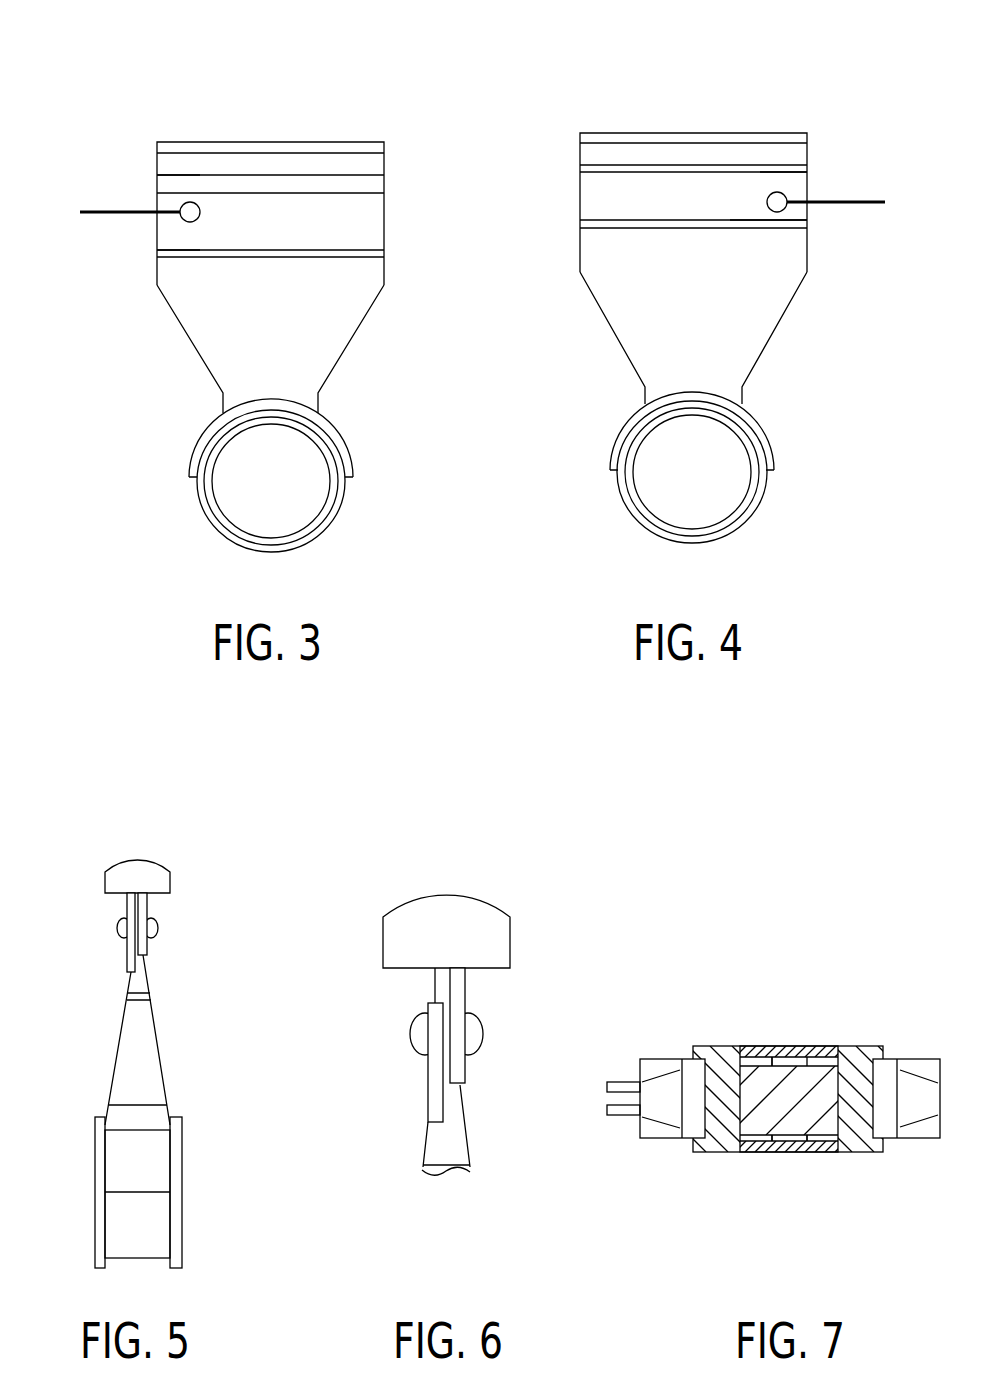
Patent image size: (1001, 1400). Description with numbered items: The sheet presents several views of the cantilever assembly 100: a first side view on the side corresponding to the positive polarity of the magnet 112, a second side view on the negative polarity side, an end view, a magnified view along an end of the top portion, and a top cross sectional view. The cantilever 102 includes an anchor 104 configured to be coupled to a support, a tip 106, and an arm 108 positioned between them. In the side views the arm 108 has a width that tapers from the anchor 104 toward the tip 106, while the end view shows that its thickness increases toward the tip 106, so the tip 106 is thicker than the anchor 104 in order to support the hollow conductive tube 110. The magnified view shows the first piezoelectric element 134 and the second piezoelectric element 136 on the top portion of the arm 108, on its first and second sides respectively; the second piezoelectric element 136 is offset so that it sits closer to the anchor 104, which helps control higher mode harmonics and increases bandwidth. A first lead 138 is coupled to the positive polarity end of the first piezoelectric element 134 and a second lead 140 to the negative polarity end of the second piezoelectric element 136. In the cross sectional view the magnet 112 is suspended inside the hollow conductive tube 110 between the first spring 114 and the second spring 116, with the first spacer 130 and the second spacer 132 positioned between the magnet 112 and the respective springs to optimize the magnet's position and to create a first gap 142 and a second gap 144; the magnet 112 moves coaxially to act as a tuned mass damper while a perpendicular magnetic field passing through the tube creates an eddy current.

In FIG. 3, the cantilever assembly 100 is at (222, 88).
In FIG. 4, the cantilever assembly 100 is at (742, 77).
In FIG. 5, the cantilever assembly 100 is at (110, 812).
In FIG. 7, the cantilever assembly 100 is at (695, 980).
In FIG. 3, the cantilever 102 is at (180, 140).
In FIG. 4, the cantilever 102 is at (775, 133).
In FIG. 7, the cantilever 102 is at (912, 1062).
In FIG. 3, the anchor 104 is at (157, 185).
In FIG. 4, the anchor 104 is at (808, 160).
In FIG. 5, the anchor 104 is at (105, 876).
In FIG. 6, the anchor 104 is at (385, 938).
In FIG. 3, the tip 106 is at (188, 462).
In FIG. 4, the tip 106 is at (775, 452).
In FIG. 5, the tip 106 is at (125, 1160).
In FIG. 3, the arm 108 is at (198, 362).
In FIG. 4, the arm 108 is at (762, 352).
In FIG. 5, the arm 108 is at (115, 1050).
In FIG. 6, the arm 108 is at (425, 1152).
In FIG. 3, the hollow conductive tube 110 is at (200, 497).
In FIG. 4, the hollow conductive tube 110 is at (762, 508).
In FIG. 5, the hollow conductive tube 110 is at (95, 1208).
In FIG. 7, the hollow conductive tube 110 is at (855, 1142).
In FIG. 7, the magnet 112 is at (762, 1108).
In FIG. 4, the first spring 114 is at (708, 500).
In FIG. 7, the first spring 114 is at (828, 1150).
In FIG. 3, the second spring 116 is at (258, 500).
In FIG. 7, the second spring 116 is at (830, 1043).
In FIG. 7, the first spacer 130 is at (790, 1148).
In FIG. 7, the second spacer 132 is at (797, 1046).
In FIG. 3, the first piezoelectric element 134 is at (165, 238).
In FIG. 6, the first piezoelectric element 134 is at (425, 1082).
In FIG. 4, the second piezoelectric element 136 is at (732, 207).
In FIG. 6, the second piezoelectric element 136 is at (470, 1080).
In FIG. 3, the first lead 138 is at (178, 200).
In FIG. 5, the first lead 138 is at (115, 928).
In FIG. 6, the first lead 138 is at (408, 1035).
In FIG. 4, the second lead 140 is at (782, 190).
In FIG. 5, the second lead 140 is at (160, 928).
In FIG. 6, the second lead 140 is at (485, 1035).
In FIG. 7, the first gap 142 is at (763, 1148).
In FIG. 7, the second gap 144 is at (757, 1046).